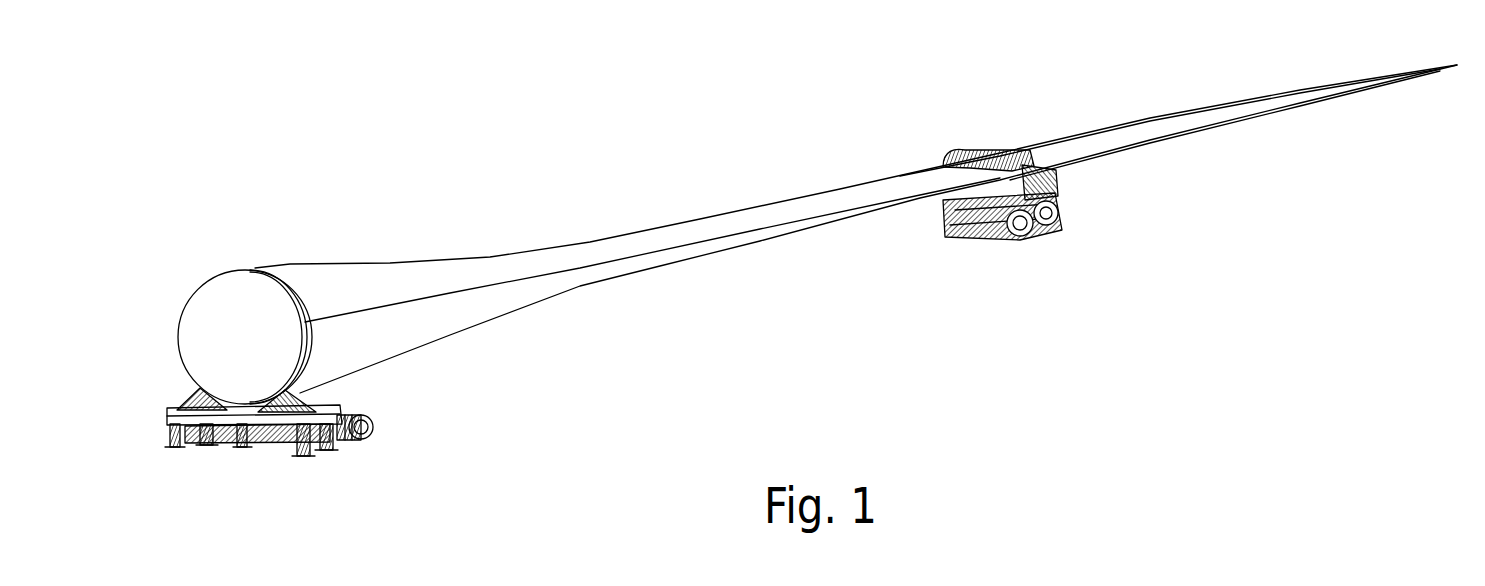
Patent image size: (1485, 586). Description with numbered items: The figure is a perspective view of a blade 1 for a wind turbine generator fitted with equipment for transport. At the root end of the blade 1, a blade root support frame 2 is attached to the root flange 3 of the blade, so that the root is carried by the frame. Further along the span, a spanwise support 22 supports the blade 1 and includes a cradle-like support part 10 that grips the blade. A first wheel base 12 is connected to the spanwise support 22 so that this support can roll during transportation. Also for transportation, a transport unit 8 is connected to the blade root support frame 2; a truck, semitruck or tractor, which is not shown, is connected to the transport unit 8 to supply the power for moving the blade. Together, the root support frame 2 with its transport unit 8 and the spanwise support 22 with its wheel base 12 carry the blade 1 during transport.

The blade 1 is at (620, 237).
The blade root support frame 2 is at (272, 430).
The root flange 3 is at (207, 278).
The transport unit 8 is at (371, 429).
The cradle-like support part 10 is at (943, 163).
The first wheel base 12 is at (1055, 224).
The spanwise support 22 is at (996, 164).